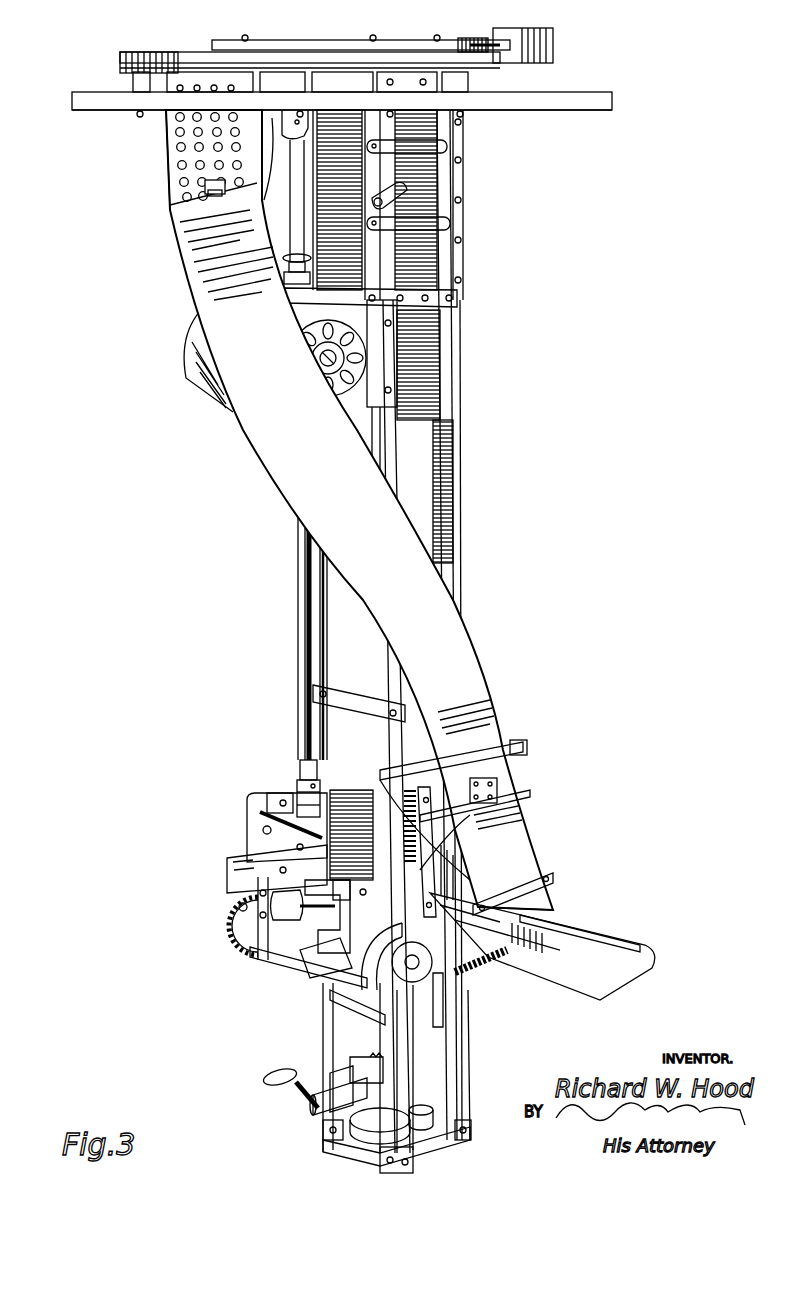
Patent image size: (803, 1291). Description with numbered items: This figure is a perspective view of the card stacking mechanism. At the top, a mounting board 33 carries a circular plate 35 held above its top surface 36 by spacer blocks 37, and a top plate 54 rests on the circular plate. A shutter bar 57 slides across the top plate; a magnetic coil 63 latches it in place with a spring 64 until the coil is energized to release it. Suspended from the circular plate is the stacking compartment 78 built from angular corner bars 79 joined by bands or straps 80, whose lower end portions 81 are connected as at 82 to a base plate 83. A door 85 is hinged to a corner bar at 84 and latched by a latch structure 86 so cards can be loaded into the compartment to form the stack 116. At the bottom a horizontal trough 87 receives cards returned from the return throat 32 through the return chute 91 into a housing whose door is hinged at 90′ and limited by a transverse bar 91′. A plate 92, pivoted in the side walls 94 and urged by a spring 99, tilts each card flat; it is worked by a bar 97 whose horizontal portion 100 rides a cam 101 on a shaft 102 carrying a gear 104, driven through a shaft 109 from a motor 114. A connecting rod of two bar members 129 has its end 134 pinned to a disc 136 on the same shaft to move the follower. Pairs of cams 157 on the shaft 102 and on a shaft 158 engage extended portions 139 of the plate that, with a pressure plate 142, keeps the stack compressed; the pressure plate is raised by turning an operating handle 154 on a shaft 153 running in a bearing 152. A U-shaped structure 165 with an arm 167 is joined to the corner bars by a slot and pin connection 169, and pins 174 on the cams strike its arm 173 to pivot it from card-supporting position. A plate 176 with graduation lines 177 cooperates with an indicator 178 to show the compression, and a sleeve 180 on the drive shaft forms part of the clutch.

The return throat 32 is at (175, 165).
The mounting board 33 is at (597, 108).
The circular plate 35 is at (120, 66).
The top surface 36 is at (562, 92).
The spacer blocks 37 is at (133, 88).
The top plate 54 is at (120, 56).
The bar 57 is at (430, 48).
The magnetic coil 63 is at (555, 43).
The spring 64 is at (486, 38).
The stacking compartment 78 is at (432, 388).
The corner bars 79 is at (388, 460).
The bands or straps 80 is at (457, 302).
The lower end portions 81 is at (462, 1072).
The connection 82 is at (472, 1120).
The base plate 83 is at (442, 1142).
The hinge 84 is at (458, 178).
The door 85 is at (448, 230).
The latch structure 86 is at (405, 195).
The trough 87 is at (618, 958).
The hinge 90′ is at (525, 757).
The return chute 91 is at (462, 642).
The transverse bar 91′ is at (552, 895).
The plate 92 is at (174, 206).
The side walls 94 is at (445, 890).
The bar 97 is at (470, 818).
The spring 99 is at (498, 790).
The horizontal portion 100 is at (470, 908).
The cam 101 is at (328, 998).
The shaft 102 is at (418, 992).
The gear 104 is at (228, 930).
The shaft 109 is at (296, 220).
The motor 114 is at (206, 392).
The stack 116 is at (355, 792).
The bar members 129 is at (500, 968).
The end 134 is at (462, 990).
The disc 136 is at (414, 1104).
The extended portions 139 is at (312, 978).
The pressure plate 142 is at (445, 1013).
The bearing 152 is at (358, 1143).
The shaft 153 is at (312, 1095).
The operating handle 154 is at (300, 1095).
The cams 157 is at (425, 893).
The shaft 158 is at (368, 1060).
The U-shaped structure 165 is at (349, 888).
The arm 167 is at (245, 840).
The slot and pin connection 169 is at (296, 782).
The arm 173 is at (320, 968).
The pins 174 is at (267, 946).
The plate 176 is at (227, 862).
The graduation lines 177 is at (228, 876).
The indicator 178 is at (235, 897).
The sleeve 180 is at (290, 128).